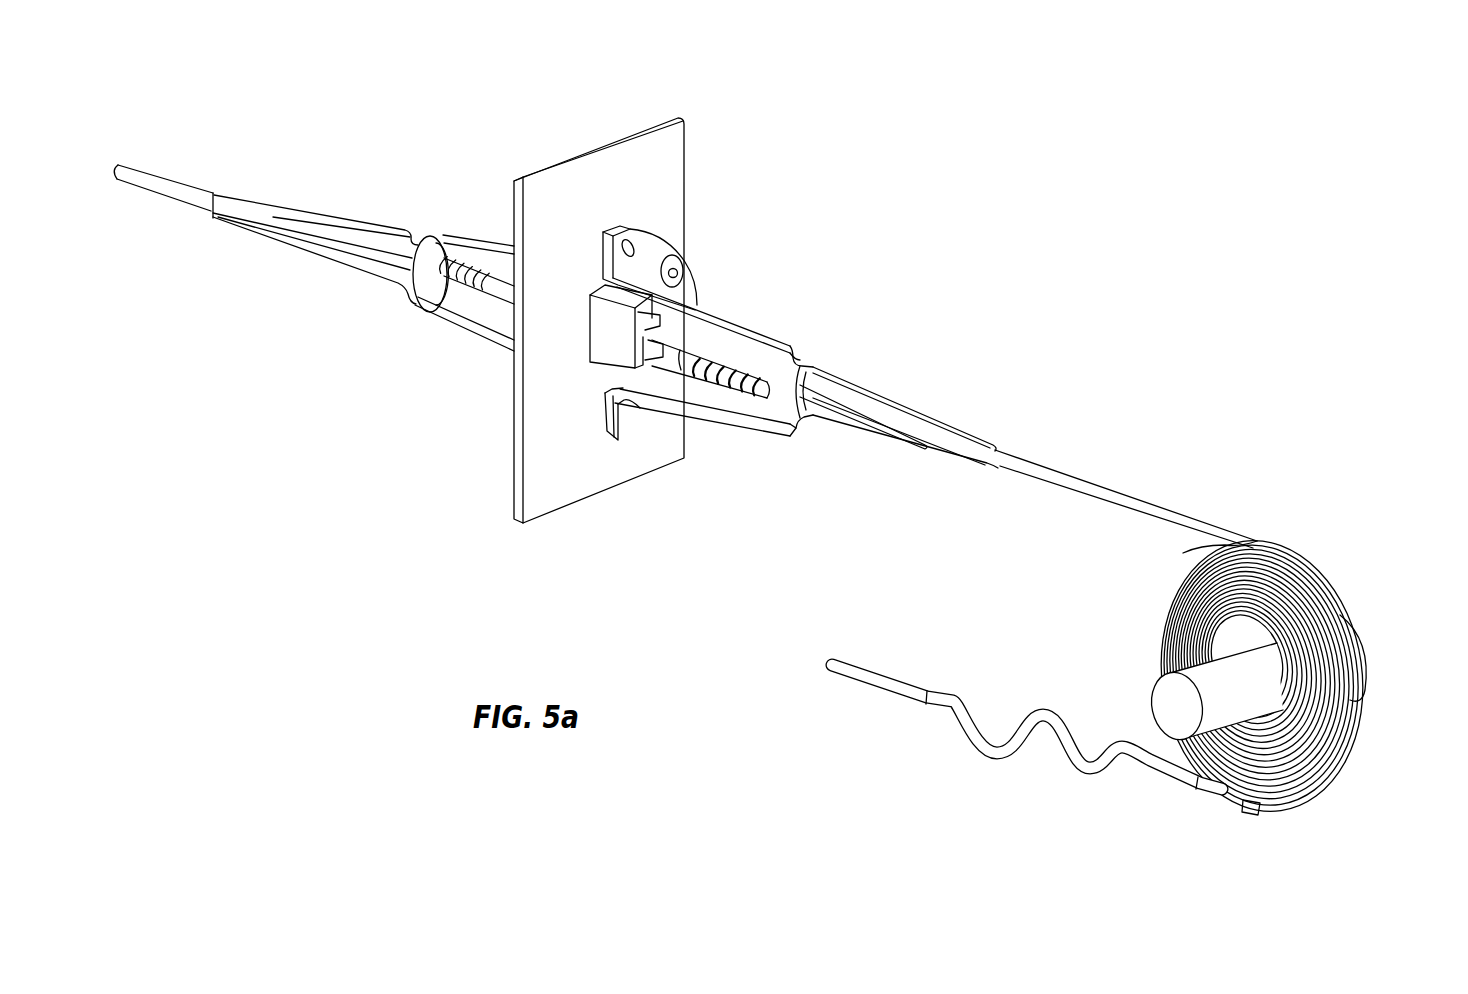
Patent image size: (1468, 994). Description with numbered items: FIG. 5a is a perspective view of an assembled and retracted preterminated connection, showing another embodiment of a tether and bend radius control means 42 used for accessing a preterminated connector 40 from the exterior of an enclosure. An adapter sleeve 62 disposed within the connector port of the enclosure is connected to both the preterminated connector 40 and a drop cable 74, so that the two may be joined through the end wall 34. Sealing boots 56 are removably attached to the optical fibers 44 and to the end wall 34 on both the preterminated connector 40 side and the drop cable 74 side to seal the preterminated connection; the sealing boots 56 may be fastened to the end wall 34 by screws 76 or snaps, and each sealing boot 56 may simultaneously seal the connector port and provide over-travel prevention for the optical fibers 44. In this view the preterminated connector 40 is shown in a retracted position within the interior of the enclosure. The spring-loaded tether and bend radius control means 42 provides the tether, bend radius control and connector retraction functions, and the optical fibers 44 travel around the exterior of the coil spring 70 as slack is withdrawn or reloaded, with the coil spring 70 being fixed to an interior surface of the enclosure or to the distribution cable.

The end wall 34 is at (620, 163).
The drop cable 74 is at (345, 247).
The sealing boots 56 is at (428, 240).
The adapter sleeve 62 is at (613, 330).
The screws 76 is at (670, 263).
The preterminated connector 40 is at (687, 350).
The optical fibers 44 is at (1065, 480).
The tether and bend radius control means 42 is at (1139, 666).
The coil spring 70 is at (1333, 728).